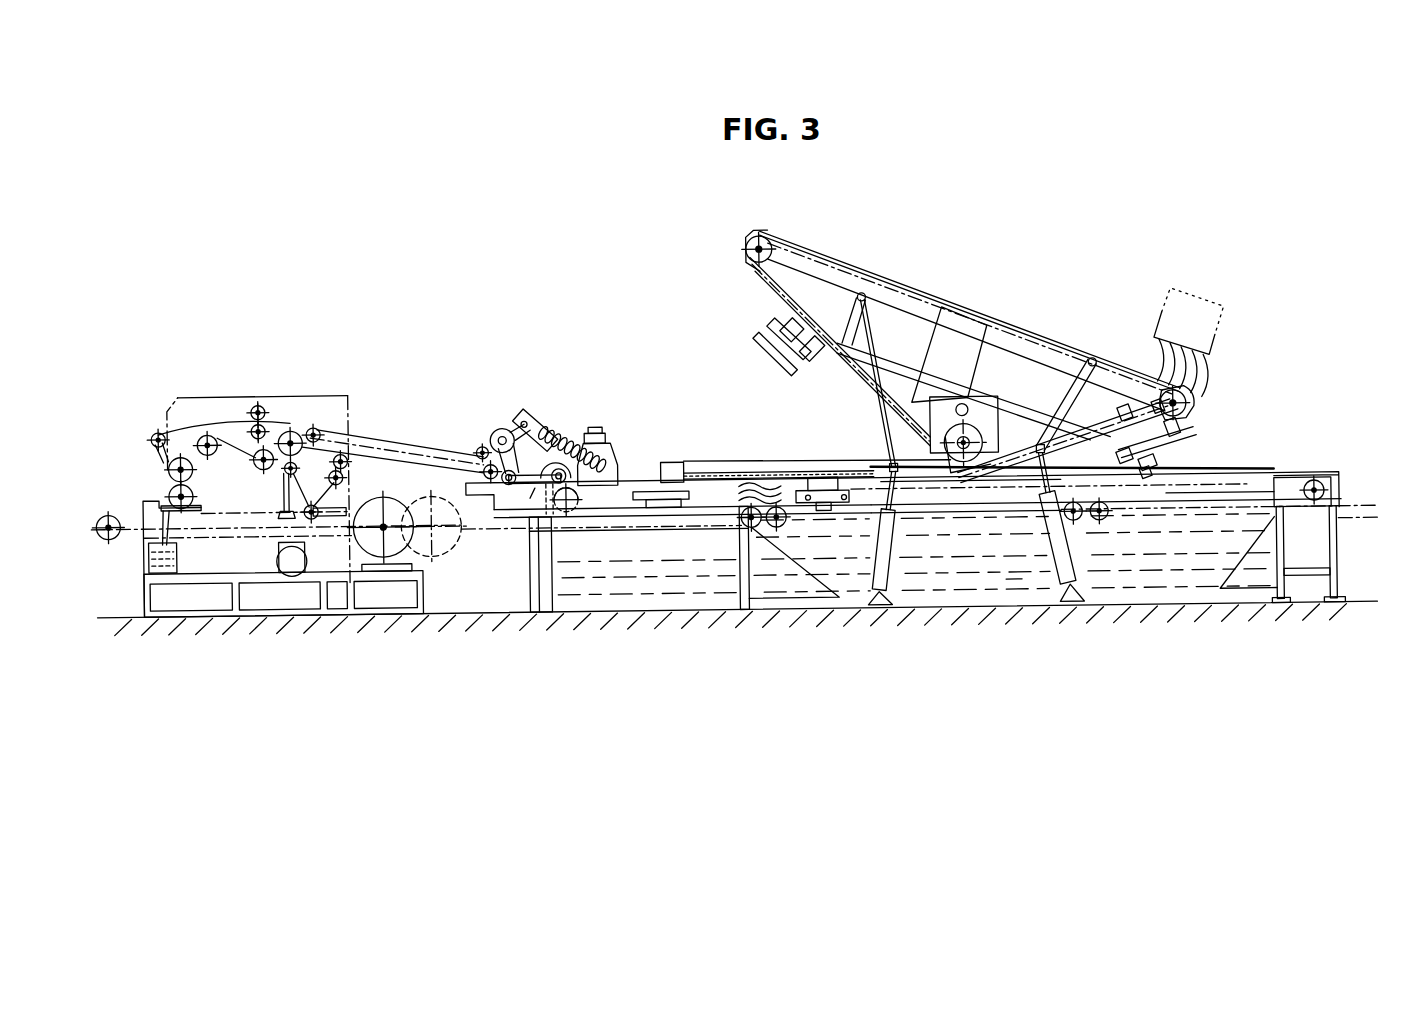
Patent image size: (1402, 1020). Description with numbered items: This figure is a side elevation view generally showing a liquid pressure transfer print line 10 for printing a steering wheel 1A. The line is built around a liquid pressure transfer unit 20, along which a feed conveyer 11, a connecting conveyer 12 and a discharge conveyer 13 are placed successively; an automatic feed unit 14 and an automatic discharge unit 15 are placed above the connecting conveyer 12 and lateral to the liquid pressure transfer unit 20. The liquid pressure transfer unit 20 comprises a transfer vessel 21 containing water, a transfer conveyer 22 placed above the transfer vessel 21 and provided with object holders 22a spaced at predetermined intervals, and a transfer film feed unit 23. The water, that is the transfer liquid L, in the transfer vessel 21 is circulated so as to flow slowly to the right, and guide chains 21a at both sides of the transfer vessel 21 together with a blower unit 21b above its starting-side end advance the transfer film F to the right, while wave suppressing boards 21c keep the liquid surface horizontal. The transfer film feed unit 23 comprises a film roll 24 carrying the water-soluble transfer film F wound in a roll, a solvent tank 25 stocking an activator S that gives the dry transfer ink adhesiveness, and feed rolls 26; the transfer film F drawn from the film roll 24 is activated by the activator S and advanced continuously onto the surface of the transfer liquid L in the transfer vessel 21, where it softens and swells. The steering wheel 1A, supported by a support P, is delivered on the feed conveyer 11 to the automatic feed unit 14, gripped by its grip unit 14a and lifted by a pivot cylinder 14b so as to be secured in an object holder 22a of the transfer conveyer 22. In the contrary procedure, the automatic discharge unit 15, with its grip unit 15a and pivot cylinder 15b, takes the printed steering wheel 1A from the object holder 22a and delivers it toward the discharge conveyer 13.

The liquid pressure transfer print line 10 is at (1243, 264).
The feed conveyer 11 is at (673, 520).
The connecting conveyer 12 is at (928, 523).
The discharge conveyer 13 is at (1180, 521).
The automatic feed unit 14 is at (683, 465).
The grip unit 14a is at (827, 490).
The pivot cylinder 14b is at (880, 582).
The automatic discharge unit 15 is at (1187, 420).
The grip unit 15a is at (1157, 459).
The pivot cylinder 15b is at (1063, 592).
The liquid pressure transfer unit 20 is at (325, 360).
The transfer vessel 21 is at (1273, 478).
The guide chains 21a is at (1325, 492).
The blower unit 21b is at (528, 418).
The wave suppressing boards 21c is at (760, 483).
The transfer conveyer 22 is at (847, 271).
The object holder 22a is at (822, 354).
The transfer film feed unit 23 is at (457, 387).
The film roll 24 is at (384, 513).
The solvent tank 25 is at (198, 503).
The feed rolls 26 is at (207, 430).
The transfer film F is at (418, 446).
The support P is at (760, 333).
The steering wheel 1A is at (786, 369).
The activator S is at (150, 558).
The transfer liquid L is at (1014, 560).